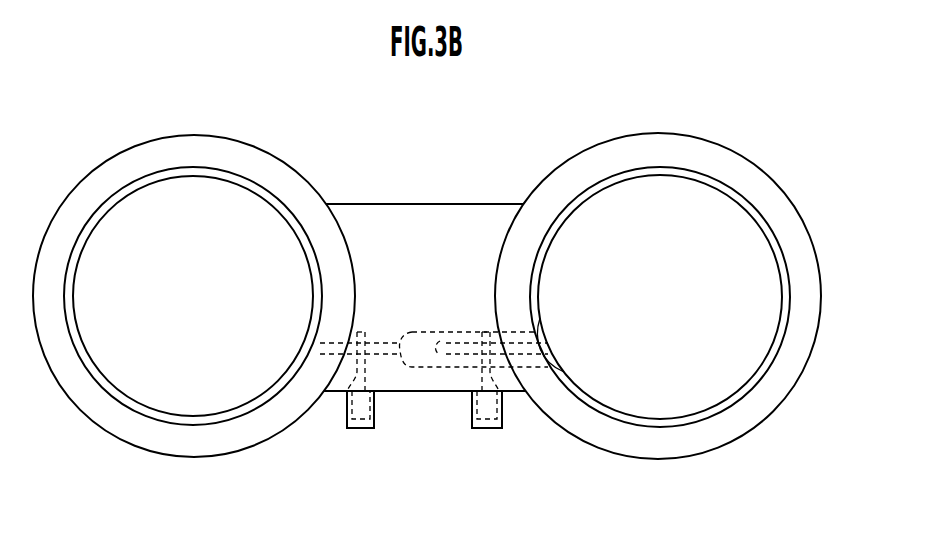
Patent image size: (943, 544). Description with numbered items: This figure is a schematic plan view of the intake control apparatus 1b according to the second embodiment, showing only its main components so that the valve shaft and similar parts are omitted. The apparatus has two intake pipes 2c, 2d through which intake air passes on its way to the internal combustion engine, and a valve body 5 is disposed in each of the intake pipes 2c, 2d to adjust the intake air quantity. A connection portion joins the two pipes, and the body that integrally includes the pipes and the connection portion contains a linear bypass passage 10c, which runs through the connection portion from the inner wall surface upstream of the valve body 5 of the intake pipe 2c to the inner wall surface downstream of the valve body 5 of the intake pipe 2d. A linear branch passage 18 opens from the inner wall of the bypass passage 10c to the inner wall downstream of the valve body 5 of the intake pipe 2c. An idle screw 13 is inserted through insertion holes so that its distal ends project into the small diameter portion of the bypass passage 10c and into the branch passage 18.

The intake control apparatus 1b is at (67, 116).
The intake pipe 2d is at (97, 163).
The intake pipe 2c is at (744, 157).
The valve body 5 is at (250, 223).
The idle screw 13 is at (347, 386).
The bypass passage 10c is at (426, 368).
The branch passage 18 is at (471, 368).